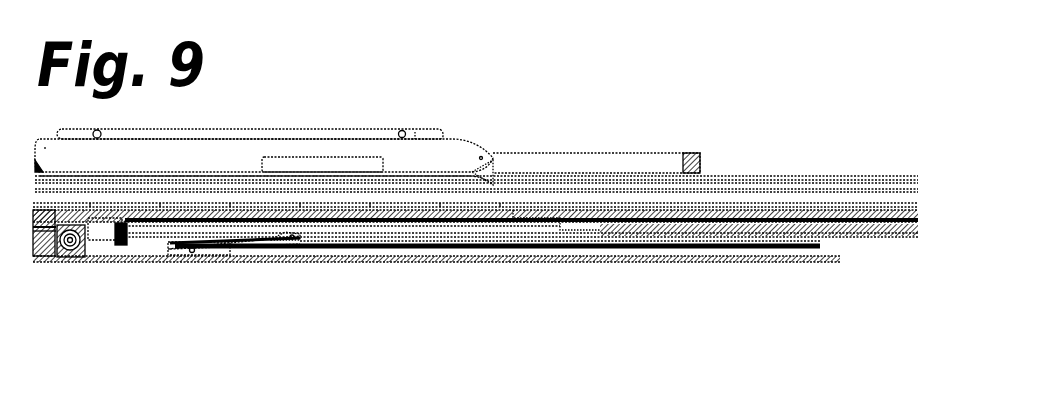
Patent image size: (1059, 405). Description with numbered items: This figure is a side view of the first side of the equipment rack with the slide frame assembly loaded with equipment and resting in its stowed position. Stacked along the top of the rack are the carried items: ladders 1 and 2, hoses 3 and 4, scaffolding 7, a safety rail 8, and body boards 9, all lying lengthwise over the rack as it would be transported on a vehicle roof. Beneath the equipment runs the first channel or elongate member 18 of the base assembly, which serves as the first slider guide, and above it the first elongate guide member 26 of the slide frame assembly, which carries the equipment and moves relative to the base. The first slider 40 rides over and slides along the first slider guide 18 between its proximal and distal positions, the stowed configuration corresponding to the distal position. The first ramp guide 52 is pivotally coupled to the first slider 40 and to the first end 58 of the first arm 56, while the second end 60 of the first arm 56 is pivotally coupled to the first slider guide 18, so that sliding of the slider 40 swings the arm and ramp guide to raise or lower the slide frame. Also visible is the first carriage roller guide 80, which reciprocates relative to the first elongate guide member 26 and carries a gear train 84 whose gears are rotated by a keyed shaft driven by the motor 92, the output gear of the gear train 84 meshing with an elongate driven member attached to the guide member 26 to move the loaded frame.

The ladder 1 is at (842, 178).
The ladder 2 is at (802, 200).
The hose 3 is at (567, 162).
The hose 4 is at (652, 212).
The scaffolding 7 is at (450, 150).
The safety rail 8 is at (268, 132).
The body boards 9 is at (478, 179).
The first channel or elongate member 18 is at (768, 262).
The first elongate guide member 26 is at (883, 235).
The first slider 40 is at (683, 237).
The first ramp guide 52 is at (383, 225).
The first arm 56 is at (242, 240).
The first end of first arm 58 is at (285, 233).
The second end of first arm 60 is at (190, 250).
The first carriage roller guide 80 is at (44, 235).
The gear train 84 is at (70, 242).
The motor 92 is at (117, 238).